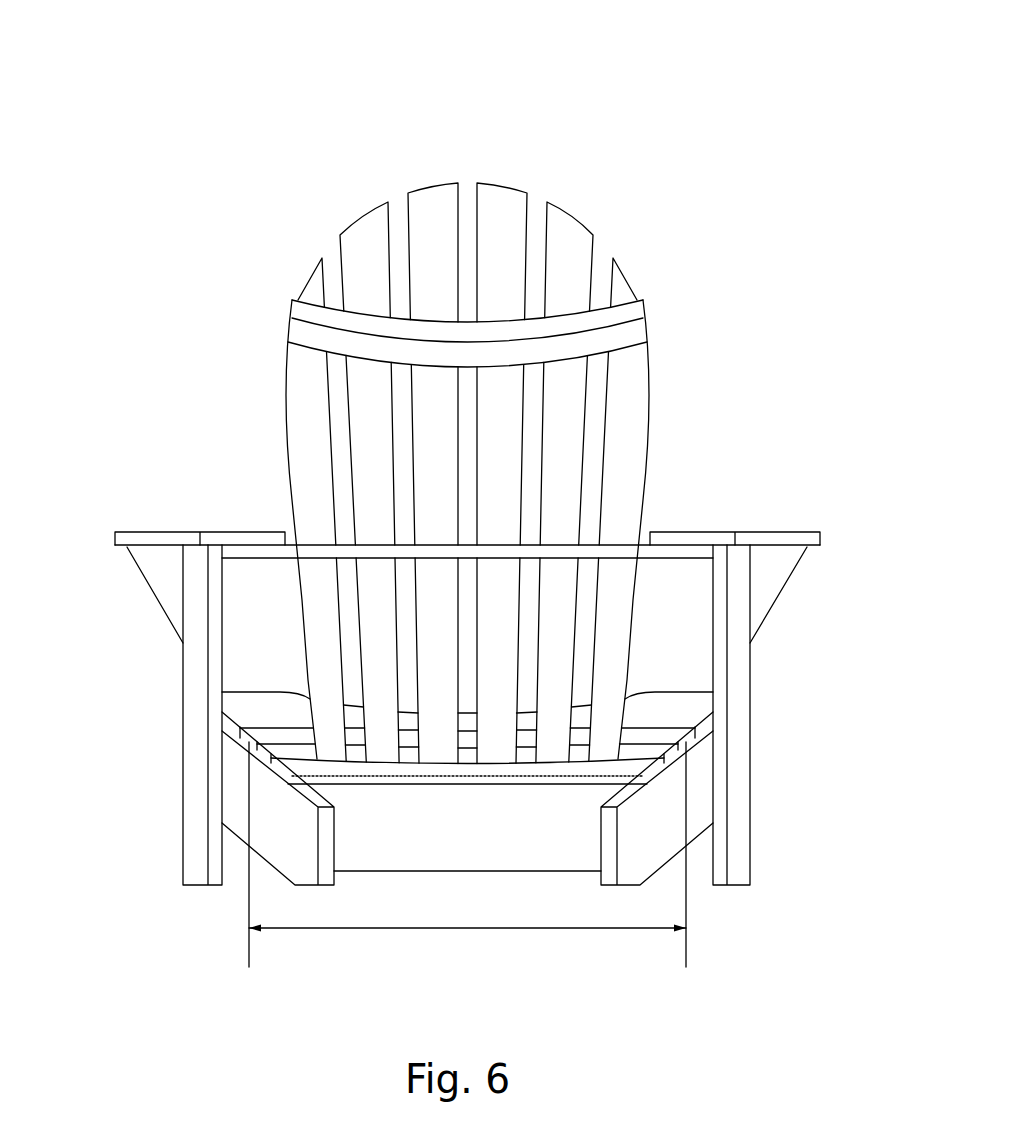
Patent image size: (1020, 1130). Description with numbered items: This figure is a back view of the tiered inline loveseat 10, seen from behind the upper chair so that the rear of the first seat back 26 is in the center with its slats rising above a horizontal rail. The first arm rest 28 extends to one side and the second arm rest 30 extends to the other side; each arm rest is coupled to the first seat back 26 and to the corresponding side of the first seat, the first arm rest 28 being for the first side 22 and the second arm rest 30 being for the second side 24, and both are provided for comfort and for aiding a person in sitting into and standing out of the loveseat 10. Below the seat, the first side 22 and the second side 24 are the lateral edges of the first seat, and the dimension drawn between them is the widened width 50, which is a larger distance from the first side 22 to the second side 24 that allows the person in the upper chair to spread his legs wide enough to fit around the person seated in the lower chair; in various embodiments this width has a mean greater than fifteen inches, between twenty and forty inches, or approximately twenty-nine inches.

The tiered inline loveseat 10 is at (172, 128).
The first side 22 is at (238, 729).
The second side 24 is at (697, 738).
The first seat back 26 is at (298, 393).
The first arm rest 28 is at (138, 527).
The second arm rest 30 is at (763, 530).
The widened width 50 is at (445, 928).